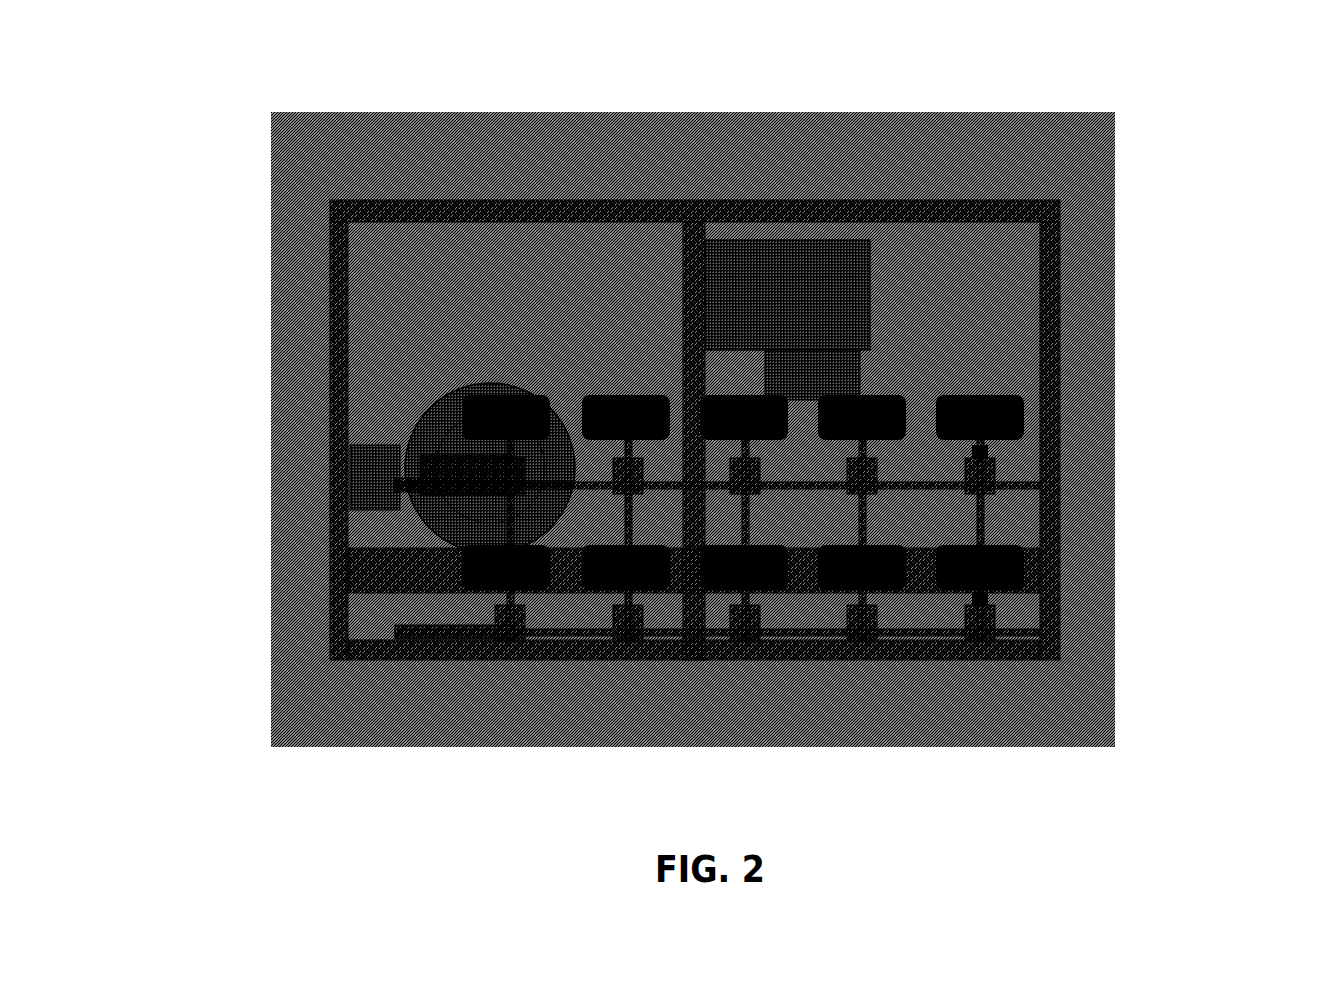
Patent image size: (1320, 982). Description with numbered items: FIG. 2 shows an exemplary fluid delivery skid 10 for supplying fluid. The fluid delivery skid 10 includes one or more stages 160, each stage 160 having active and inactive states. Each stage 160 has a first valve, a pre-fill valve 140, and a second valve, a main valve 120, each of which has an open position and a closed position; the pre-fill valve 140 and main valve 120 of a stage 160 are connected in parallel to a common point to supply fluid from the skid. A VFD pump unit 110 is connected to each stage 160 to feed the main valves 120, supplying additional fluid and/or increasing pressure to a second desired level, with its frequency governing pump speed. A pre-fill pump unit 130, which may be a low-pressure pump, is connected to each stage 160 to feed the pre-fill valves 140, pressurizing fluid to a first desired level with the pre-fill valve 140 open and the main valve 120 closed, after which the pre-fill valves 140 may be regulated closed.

The fluid delivery skid 10 is at (616, 397).
The variable frequency drive (VFD) pump unit 110 is at (380, 408).
The pre-fill pump unit 130 is at (302, 534).
The main valve 120 is at (1008, 472).
The pre-fill valve 140 is at (1005, 633).
The stage 160 is at (838, 665).